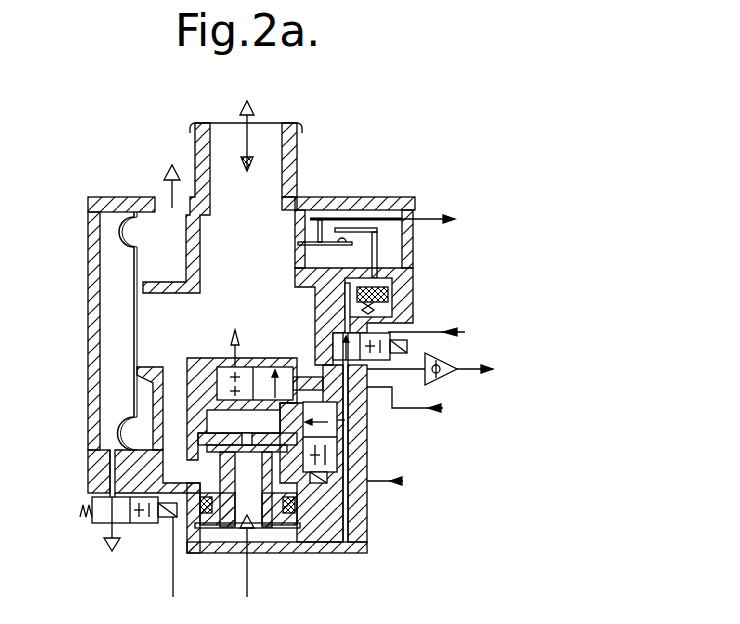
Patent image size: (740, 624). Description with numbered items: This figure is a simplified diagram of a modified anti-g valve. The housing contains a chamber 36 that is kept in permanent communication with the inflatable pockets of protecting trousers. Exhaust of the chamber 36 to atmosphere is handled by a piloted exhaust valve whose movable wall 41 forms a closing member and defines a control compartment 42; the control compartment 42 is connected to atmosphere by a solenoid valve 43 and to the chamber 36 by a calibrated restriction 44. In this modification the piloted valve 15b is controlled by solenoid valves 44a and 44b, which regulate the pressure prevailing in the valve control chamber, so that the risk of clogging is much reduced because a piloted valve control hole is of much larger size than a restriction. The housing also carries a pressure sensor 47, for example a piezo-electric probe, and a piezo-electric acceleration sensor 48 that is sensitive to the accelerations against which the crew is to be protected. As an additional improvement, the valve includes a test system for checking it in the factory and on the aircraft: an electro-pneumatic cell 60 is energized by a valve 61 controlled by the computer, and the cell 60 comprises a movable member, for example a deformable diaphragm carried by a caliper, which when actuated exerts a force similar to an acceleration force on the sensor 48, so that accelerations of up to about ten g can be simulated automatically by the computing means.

The chamber 36 is at (215, 342).
The movable wall 41 is at (135, 350).
The control compartment 42 is at (117, 422).
The solenoid valve 43 is at (105, 523).
The calibrated restriction 44 is at (120, 492).
The solenoid valve 44a is at (327, 443).
The solenoid valve 44b is at (262, 373).
The pressure sensor 47 is at (447, 372).
The acceleration sensor 48 is at (320, 236).
The electro-pneumatic cell 60 is at (388, 291).
The valve 61 is at (385, 337).
The piloted valve 15b is at (250, 448).